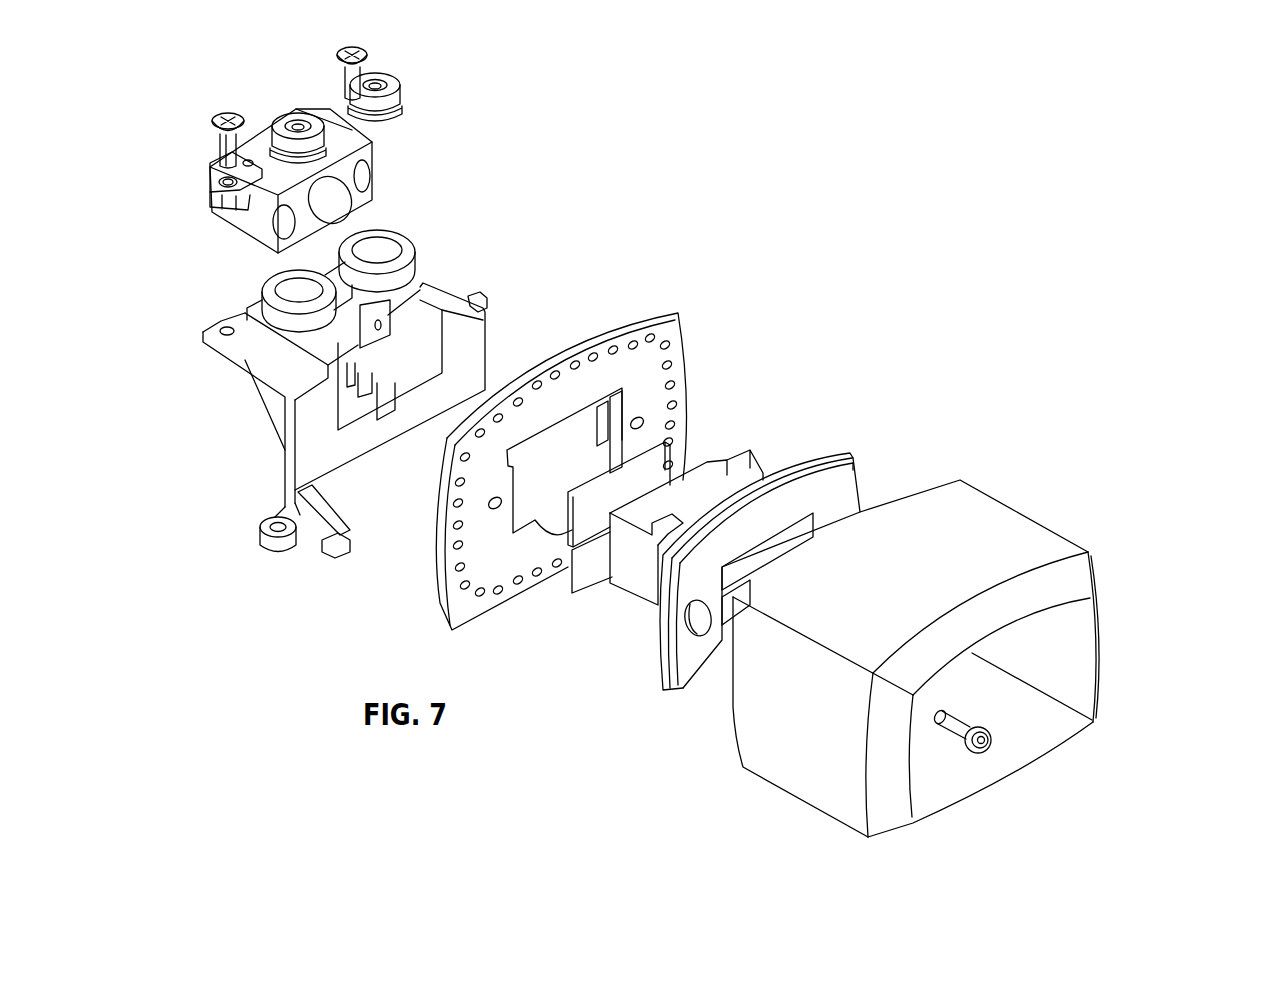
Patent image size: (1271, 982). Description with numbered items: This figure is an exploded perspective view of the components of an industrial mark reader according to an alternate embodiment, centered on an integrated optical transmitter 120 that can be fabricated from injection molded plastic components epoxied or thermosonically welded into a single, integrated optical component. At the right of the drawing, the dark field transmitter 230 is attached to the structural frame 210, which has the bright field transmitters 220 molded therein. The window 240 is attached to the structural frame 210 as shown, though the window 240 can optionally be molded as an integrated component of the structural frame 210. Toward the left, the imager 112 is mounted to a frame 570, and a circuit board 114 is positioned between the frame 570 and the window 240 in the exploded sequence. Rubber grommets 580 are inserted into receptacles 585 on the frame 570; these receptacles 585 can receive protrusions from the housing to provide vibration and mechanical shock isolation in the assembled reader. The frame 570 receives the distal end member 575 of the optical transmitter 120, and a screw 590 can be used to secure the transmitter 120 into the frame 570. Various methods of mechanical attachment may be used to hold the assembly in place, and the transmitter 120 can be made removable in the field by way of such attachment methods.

The imager 112 is at (379, 178).
The rubber grommets 580 is at (292, 116).
The frame 570 is at (434, 270).
The receptacles 585 is at (266, 283).
The circuit board 114 is at (668, 307).
The window 240 is at (691, 437).
The distal end member 575 is at (737, 445).
The structural frame 210 is at (861, 470).
The bright field transmitters 220 is at (698, 637).
The integrated optical transmitter 120 is at (880, 315).
The dark field transmitter 230 is at (1075, 577).
The screw 590 is at (970, 753).